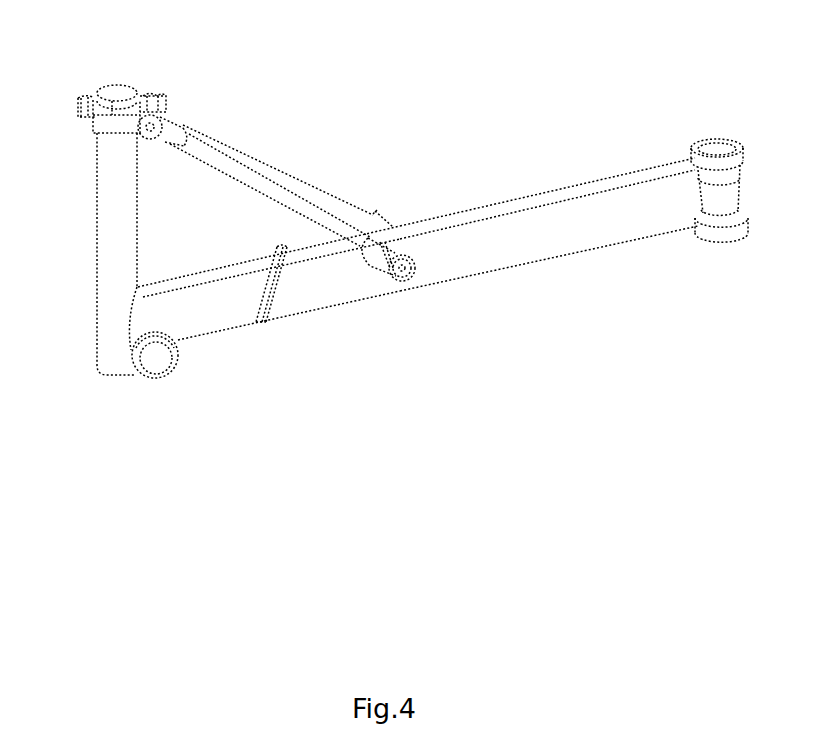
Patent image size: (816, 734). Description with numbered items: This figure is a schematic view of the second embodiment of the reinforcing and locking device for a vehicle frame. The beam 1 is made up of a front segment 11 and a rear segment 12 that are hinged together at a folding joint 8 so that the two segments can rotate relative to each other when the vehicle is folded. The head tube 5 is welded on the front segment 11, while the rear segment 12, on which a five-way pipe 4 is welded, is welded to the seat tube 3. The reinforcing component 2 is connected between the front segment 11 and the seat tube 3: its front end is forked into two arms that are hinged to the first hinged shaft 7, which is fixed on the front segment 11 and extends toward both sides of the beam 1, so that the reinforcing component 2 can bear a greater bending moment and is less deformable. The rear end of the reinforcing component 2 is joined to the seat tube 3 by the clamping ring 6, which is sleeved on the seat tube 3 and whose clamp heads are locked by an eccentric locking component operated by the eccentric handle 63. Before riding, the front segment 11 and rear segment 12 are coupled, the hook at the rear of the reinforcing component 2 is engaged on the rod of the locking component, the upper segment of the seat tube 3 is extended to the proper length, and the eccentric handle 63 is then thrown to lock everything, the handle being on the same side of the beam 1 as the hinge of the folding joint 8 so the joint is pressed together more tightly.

The beam 1 is at (523, 153).
The reinforcing component 2 is at (308, 205).
The seat tube 3 is at (105, 282).
The five-way pipe 4 is at (157, 366).
The head tube 5 is at (707, 142).
The clamping ring 6 is at (110, 138).
The eccentric handle 63 is at (80, 105).
The first hinged shaft 7 is at (400, 264).
The folding joint 8 is at (278, 308).
The front segment 11 is at (492, 253).
The rear segment 12 is at (188, 318).